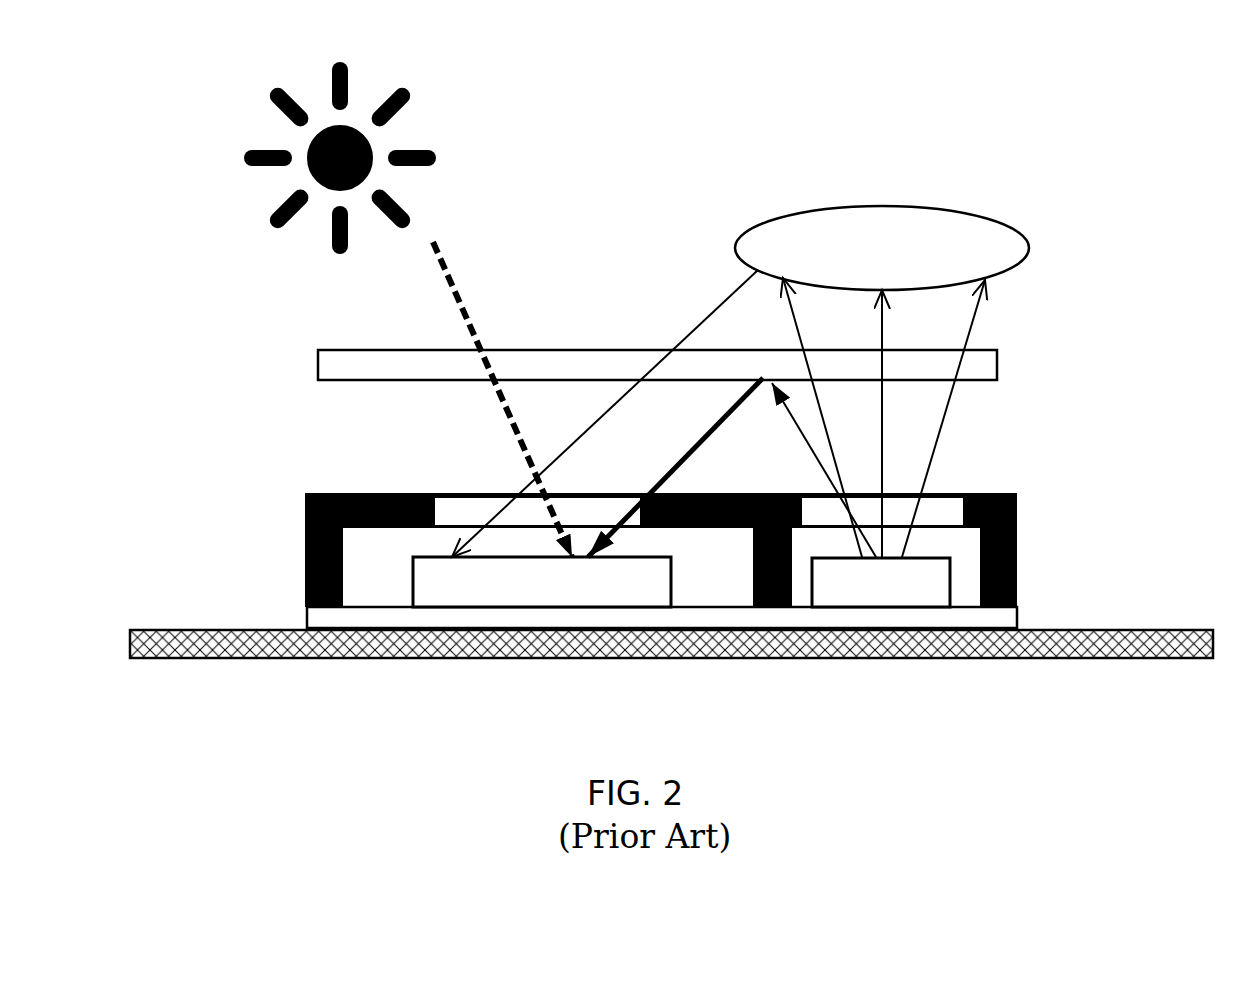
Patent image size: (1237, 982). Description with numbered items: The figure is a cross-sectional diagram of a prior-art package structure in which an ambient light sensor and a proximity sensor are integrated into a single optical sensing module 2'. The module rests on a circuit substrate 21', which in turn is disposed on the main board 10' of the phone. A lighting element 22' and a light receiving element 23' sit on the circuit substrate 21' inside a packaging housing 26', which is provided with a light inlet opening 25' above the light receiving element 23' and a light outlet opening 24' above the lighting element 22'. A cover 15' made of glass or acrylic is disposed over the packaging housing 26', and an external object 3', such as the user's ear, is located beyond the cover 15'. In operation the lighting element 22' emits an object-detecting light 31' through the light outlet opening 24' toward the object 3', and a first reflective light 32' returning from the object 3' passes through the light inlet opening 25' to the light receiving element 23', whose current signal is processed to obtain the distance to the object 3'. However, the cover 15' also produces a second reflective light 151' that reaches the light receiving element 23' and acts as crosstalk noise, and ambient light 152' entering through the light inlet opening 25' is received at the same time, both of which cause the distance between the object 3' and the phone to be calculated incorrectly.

The optical sensing module 2' is at (198, 348).
The external object 3' is at (858, 218).
The main board 10' is at (679, 597).
The cover 15' is at (730, 403).
The circuit substrate 21' is at (718, 590).
The lighting element 22' is at (881, 631).
The light receiving element 23' is at (542, 630).
The light outlet opening 24' is at (925, 474).
The light inlet opening 25' is at (504, 474).
The packaging housing 26' is at (726, 550).
The object-detecting light 31' is at (866, 333).
The first reflective light 32' is at (605, 410).
The second reflective light 151' is at (675, 467).
The ambient light 152' is at (502, 394).